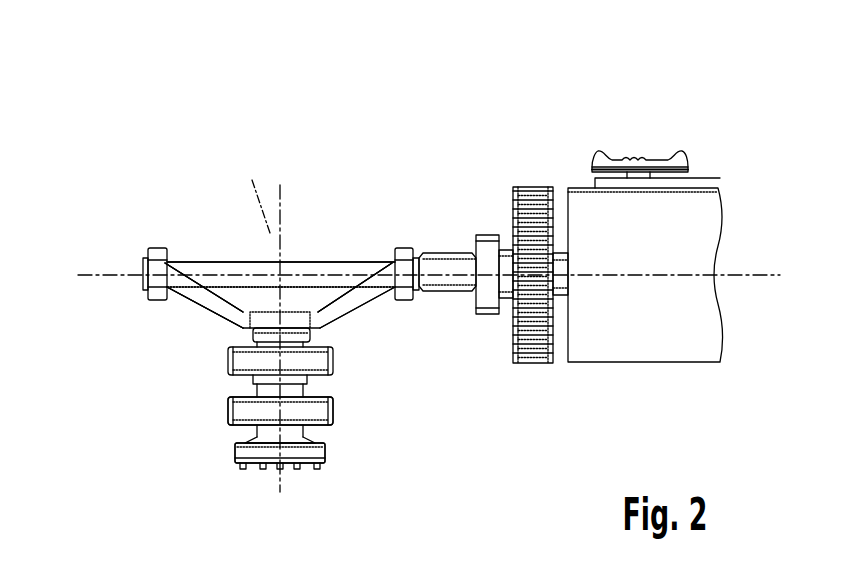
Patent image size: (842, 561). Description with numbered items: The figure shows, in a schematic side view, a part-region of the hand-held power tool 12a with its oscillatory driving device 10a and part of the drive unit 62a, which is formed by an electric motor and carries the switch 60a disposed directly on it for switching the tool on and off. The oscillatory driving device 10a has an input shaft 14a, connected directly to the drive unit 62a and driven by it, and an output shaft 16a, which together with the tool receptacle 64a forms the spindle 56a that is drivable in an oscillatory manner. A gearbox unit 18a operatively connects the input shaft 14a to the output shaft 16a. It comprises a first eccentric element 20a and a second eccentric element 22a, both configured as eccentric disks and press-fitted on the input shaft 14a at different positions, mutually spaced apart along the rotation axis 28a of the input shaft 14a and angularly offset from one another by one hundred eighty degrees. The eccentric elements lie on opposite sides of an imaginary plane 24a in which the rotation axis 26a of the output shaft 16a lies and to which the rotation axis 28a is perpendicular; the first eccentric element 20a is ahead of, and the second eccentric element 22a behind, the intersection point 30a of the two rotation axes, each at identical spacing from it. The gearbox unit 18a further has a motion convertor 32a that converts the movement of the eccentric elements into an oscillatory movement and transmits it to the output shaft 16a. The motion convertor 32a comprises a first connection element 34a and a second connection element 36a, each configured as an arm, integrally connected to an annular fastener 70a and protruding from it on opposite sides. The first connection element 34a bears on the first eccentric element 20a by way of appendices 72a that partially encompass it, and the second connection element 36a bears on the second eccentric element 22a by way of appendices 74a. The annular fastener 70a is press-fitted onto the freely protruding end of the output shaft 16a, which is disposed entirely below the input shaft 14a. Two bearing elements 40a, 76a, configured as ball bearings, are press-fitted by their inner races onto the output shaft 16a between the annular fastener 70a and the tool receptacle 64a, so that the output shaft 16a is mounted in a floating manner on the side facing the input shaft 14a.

The oscillatory driving device 10a is at (279, 130).
The hand-held power tool 12a is at (353, 107).
The input shaft 14a is at (455, 260).
The output shaft 16a is at (300, 437).
The gearbox unit 18a is at (426, 190).
The first eccentric element 20a is at (406, 247).
The second eccentric element 22a is at (158, 252).
The imaginary plane 24a is at (282, 247).
The rotation axis of the output shaft 26a is at (244, 192).
The rotation axis of the input shaft 28a is at (100, 262).
The intersection point 30a is at (288, 259).
The motion convertor 32a is at (192, 320).
The first connection element 34a is at (342, 306).
The second connection element 36a is at (220, 310).
The bearing element 40a is at (316, 362).
The spindle 56a is at (198, 444).
The switch 60a is at (679, 158).
The drive unit 62a is at (673, 343).
The tool receptacle 64a is at (247, 453).
The annular fastener 70a is at (240, 336).
The appendix 72a is at (388, 266).
The appendix 74a is at (165, 266).
The bearing element 76a is at (315, 412).